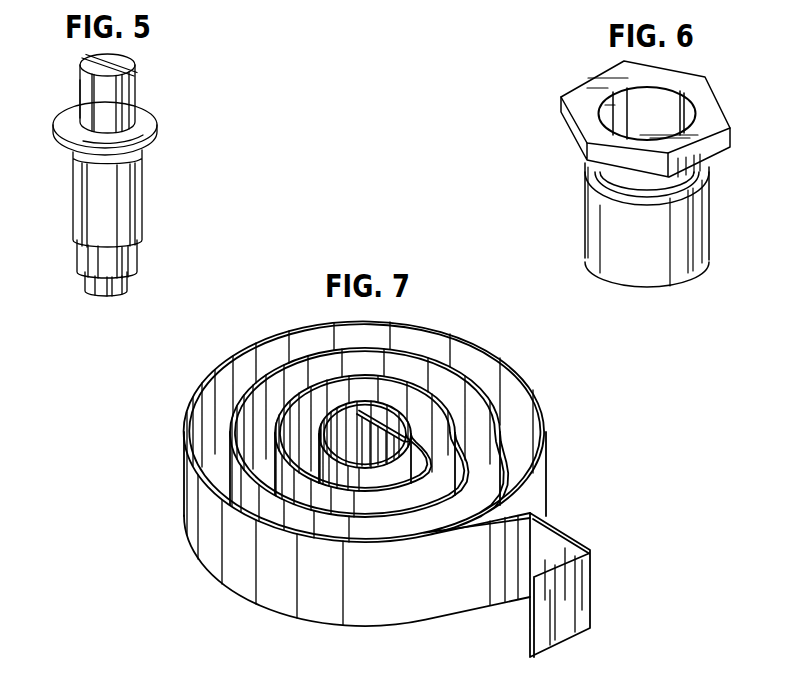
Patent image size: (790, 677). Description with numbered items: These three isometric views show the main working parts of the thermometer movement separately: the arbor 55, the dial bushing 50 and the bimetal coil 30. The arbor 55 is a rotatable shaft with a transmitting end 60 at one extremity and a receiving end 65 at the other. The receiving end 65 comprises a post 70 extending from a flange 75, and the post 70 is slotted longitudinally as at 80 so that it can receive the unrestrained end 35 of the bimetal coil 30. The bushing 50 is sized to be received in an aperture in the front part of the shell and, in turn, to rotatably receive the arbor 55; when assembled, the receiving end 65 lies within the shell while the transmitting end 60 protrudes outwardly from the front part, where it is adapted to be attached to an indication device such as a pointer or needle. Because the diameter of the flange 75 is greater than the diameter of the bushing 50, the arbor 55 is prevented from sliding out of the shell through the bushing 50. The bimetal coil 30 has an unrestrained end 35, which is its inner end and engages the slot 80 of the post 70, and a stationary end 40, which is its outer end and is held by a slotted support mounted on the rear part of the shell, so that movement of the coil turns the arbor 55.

In FIG. 7, the bimetal coil 30 is at (368, 489).
In FIG. 7, the unrestrained end 35 is at (360, 413).
In FIG. 7, the stationary end 40 is at (572, 538).
In FIG. 6, the bushing 50 is at (552, 174).
In FIG. 5, the arbor 55 is at (133, 174).
In FIG. 5, the transmitting end 60 is at (159, 181).
In FIG. 5, the receiving end 65 is at (156, 92).
In FIG. 5, the post 70 is at (78, 91).
In FIG. 5, the flange 75 is at (158, 125).
In FIG. 5, the slot 80 is at (122, 61).